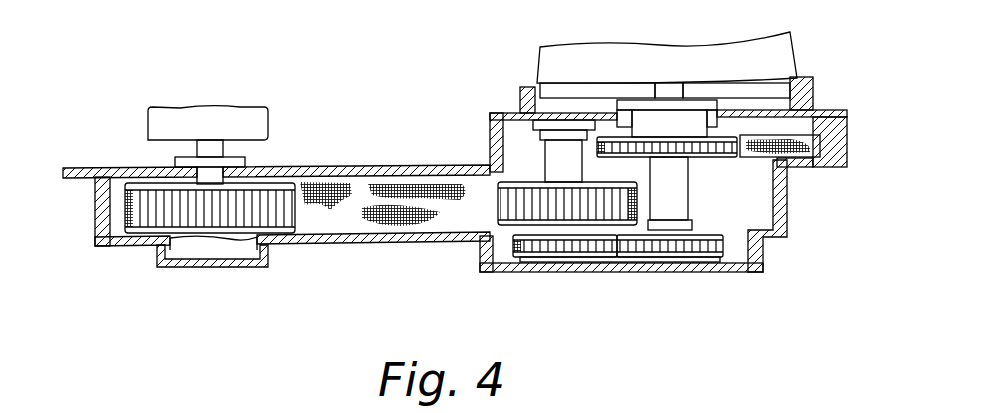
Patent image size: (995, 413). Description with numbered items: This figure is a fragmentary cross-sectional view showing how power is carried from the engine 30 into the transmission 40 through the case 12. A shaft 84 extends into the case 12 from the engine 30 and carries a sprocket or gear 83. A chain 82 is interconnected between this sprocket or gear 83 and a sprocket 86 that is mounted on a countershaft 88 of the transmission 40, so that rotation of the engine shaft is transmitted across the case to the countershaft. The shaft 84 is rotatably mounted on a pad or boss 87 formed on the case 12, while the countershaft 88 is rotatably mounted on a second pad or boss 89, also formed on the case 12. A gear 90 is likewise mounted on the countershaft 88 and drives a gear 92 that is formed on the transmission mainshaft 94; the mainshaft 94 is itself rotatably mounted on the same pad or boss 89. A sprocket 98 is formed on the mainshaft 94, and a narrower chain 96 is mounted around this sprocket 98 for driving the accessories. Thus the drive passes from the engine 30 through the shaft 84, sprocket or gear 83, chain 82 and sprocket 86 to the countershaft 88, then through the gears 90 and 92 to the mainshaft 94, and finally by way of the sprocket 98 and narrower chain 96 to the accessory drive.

The case 12 is at (340, 243).
The engine 30 is at (232, 125).
The transmission 40 is at (775, 56).
The chain 82 is at (358, 190).
The sprocket or gear 83 is at (263, 200).
The shaft 84 is at (203, 148).
The sprocket 86 is at (502, 200).
The pad or boss 87 is at (208, 268).
The countershaft 88 is at (551, 157).
The pad or boss 89 is at (541, 265).
The gear 90 is at (588, 250).
The gear 92 is at (702, 240).
The transmission mainshaft 94 is at (675, 184).
The narrower chain 96 is at (818, 143).
The sprocket 98 is at (643, 137).